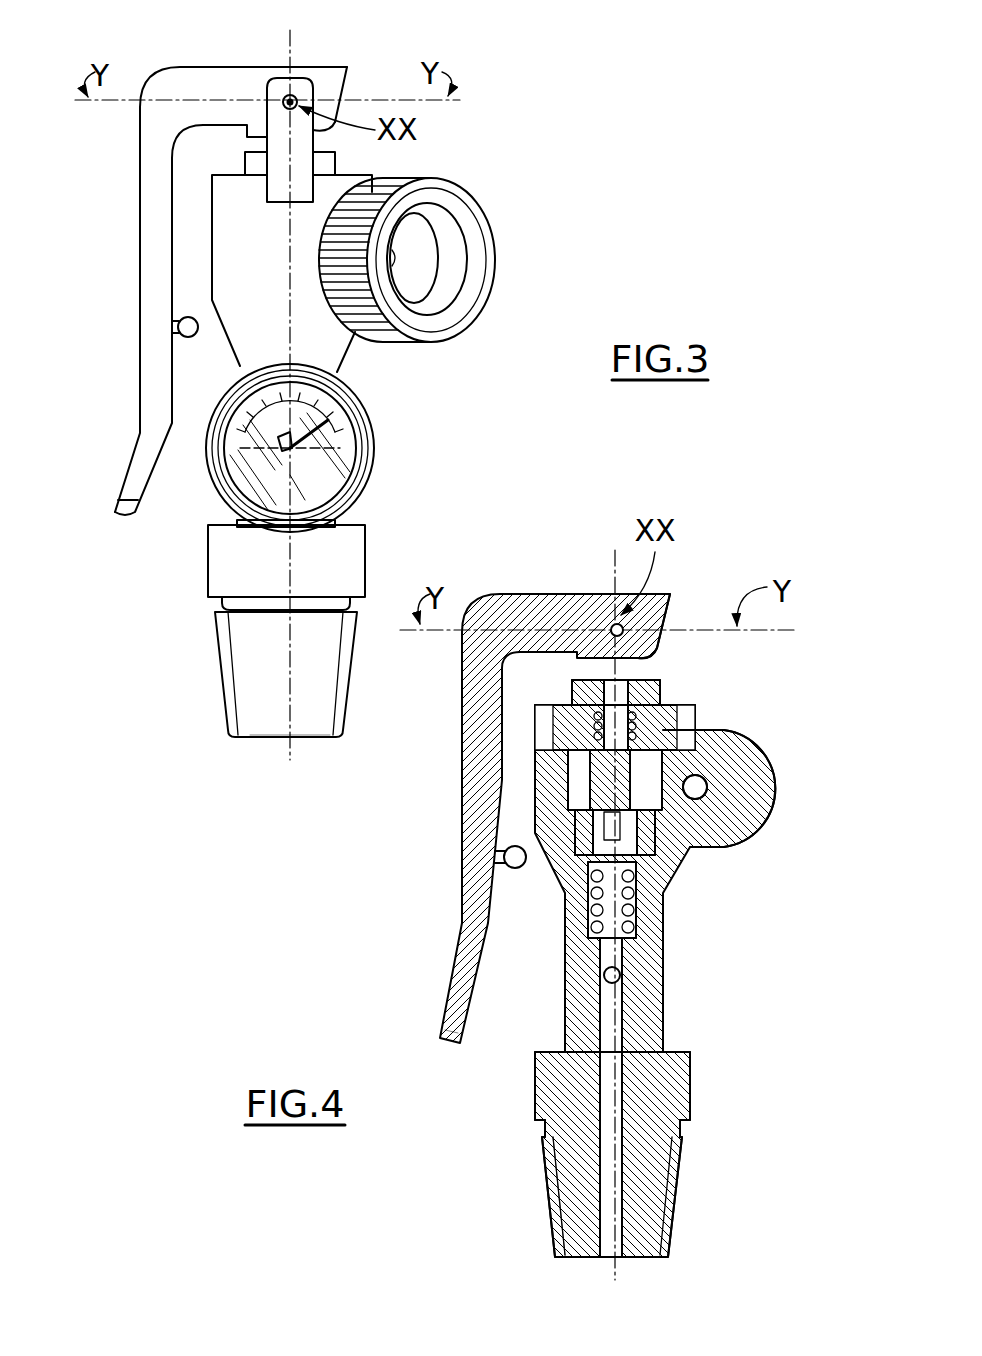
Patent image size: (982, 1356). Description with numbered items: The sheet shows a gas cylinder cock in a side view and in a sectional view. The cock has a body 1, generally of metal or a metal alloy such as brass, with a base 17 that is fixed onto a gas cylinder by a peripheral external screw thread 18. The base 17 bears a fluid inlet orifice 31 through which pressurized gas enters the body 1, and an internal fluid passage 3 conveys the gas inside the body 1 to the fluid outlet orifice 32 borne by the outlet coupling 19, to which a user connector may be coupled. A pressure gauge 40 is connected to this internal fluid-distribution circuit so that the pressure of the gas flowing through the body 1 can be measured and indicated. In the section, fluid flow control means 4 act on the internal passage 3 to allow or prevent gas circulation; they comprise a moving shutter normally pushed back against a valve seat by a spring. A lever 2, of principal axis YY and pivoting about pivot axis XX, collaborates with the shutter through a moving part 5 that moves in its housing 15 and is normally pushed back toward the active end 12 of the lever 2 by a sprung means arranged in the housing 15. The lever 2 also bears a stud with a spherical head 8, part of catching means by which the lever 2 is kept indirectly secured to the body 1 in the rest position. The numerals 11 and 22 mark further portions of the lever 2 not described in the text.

In FIG. 3, the body 1 is at (303, 326).
In FIG. 4, the body 1 is at (641, 971).
In FIG. 3, the lever 2 is at (275, 270).
In FIG. 4, the lever 2 is at (593, 776).
In FIG. 4, the internal fluid passage 3 is at (610, 1077).
In FIG. 4, the fluid flow control means 4 is at (645, 862).
In FIG. 4, the moving part 5 is at (661, 693).
In FIG. 4, the stud with a spherical head 8 is at (518, 878).
In FIG. 3, the lever free end 11 is at (121, 456).
In FIG. 4, the lever free end 11 is at (446, 1003).
In FIG. 3, the active end 12 is at (333, 86).
In FIG. 4, the active end 12 is at (656, 607).
In FIG. 4, the housing 15 is at (646, 727).
In FIG. 3, the base 17 is at (260, 667).
In FIG. 4, the base 17 is at (623, 1168).
In FIG. 3, the peripheral external screw thread 18 is at (355, 686).
In FIG. 4, the peripheral external screw thread 18 is at (543, 1199).
In FIG. 3, the outlet coupling 19 is at (456, 277).
In FIG. 4, the outlet coupling 19 is at (736, 808).
In FIG. 3, the cam portion 22 is at (343, 135).
In FIG. 4, the cam portion 22 is at (675, 643).
In FIG. 3, the fluid inlet orifice 31 is at (265, 700).
In FIG. 4, the fluid inlet orifice 31 is at (613, 1261).
In FIG. 3, the fluid outlet orifice 32 is at (450, 263).
In FIG. 3, the pressure gauge 40 is at (308, 470).